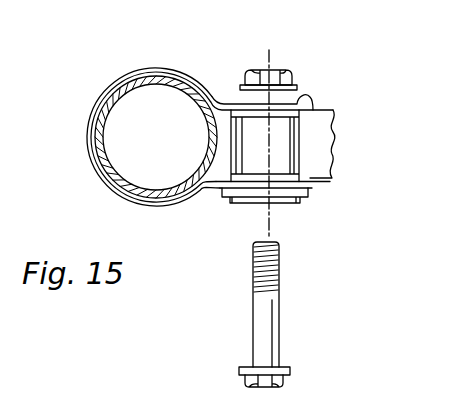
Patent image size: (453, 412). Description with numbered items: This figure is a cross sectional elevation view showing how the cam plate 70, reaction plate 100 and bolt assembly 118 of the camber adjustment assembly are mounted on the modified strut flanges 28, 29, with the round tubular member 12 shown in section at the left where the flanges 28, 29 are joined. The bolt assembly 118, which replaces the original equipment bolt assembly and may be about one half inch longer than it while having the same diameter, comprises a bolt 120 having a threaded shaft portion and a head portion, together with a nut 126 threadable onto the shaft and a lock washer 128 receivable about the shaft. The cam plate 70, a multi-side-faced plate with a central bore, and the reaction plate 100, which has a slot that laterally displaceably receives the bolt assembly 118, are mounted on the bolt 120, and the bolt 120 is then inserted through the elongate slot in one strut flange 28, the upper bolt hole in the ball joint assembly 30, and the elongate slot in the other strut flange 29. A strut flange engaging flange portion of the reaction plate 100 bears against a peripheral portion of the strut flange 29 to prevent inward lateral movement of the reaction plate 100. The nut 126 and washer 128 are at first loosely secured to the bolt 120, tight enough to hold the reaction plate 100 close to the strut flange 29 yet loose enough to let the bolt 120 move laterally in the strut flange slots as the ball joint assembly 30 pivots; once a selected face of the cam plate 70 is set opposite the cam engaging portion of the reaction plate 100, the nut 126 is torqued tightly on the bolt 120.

The tubular member 12 is at (168, 136).
The strut flange 28 is at (320, 112).
The strut flange 29 is at (218, 186).
The ball joint assembly 30 is at (336, 146).
The cam plate 70 is at (237, 197).
The reaction plate 100 is at (306, 190).
The bolt assembly 118 is at (232, 320).
The bolt 120 is at (282, 330).
The nut 126 is at (292, 74).
The lock washer 128 is at (298, 88).